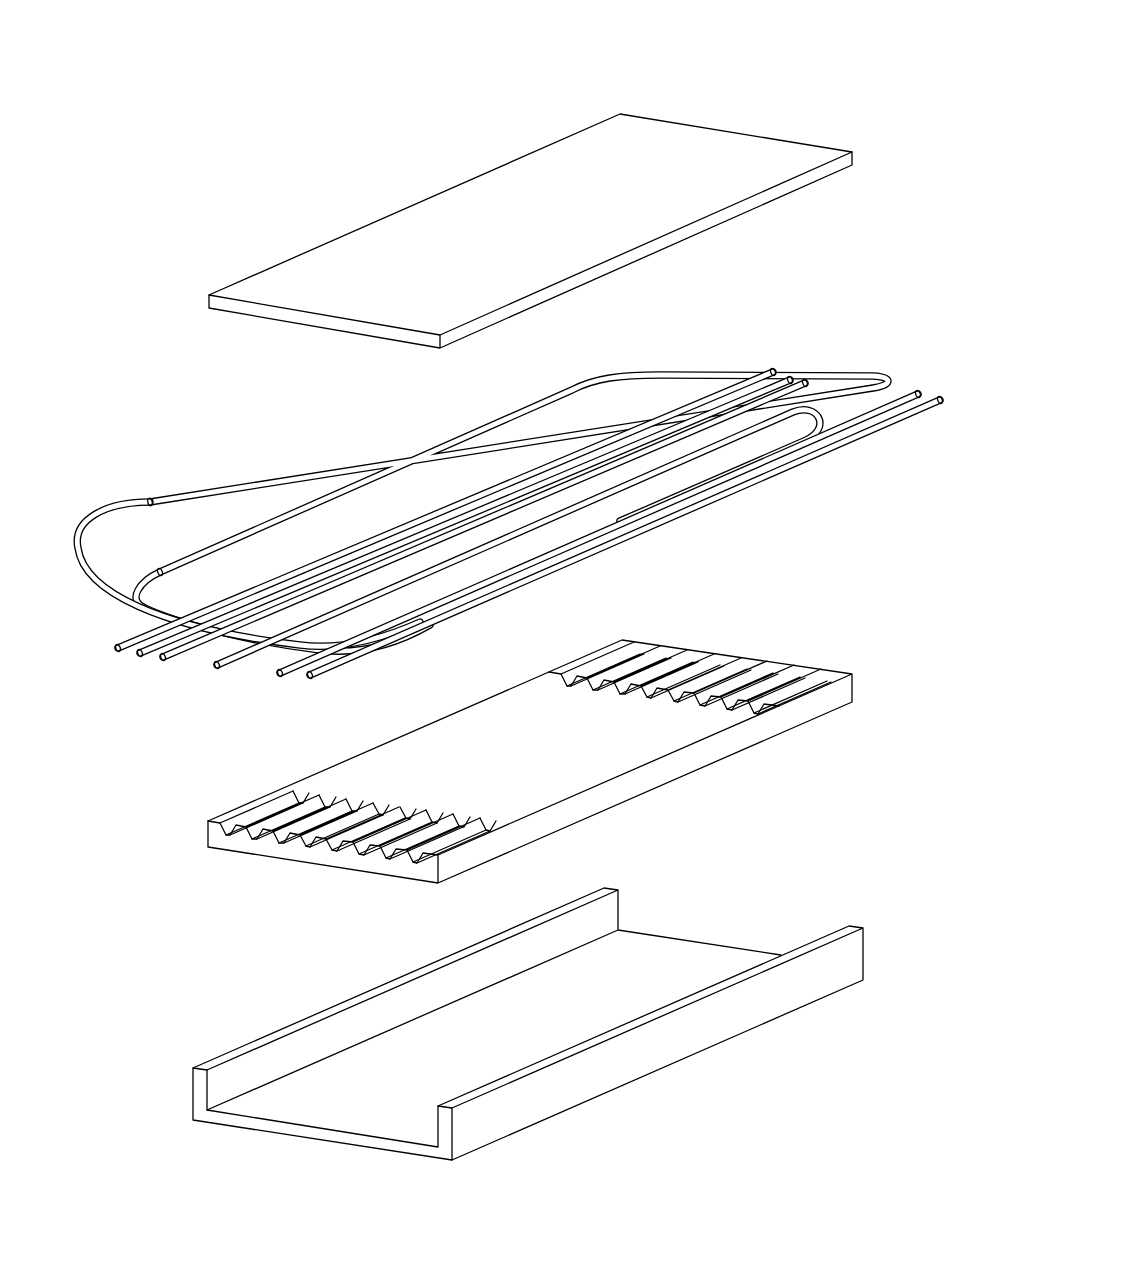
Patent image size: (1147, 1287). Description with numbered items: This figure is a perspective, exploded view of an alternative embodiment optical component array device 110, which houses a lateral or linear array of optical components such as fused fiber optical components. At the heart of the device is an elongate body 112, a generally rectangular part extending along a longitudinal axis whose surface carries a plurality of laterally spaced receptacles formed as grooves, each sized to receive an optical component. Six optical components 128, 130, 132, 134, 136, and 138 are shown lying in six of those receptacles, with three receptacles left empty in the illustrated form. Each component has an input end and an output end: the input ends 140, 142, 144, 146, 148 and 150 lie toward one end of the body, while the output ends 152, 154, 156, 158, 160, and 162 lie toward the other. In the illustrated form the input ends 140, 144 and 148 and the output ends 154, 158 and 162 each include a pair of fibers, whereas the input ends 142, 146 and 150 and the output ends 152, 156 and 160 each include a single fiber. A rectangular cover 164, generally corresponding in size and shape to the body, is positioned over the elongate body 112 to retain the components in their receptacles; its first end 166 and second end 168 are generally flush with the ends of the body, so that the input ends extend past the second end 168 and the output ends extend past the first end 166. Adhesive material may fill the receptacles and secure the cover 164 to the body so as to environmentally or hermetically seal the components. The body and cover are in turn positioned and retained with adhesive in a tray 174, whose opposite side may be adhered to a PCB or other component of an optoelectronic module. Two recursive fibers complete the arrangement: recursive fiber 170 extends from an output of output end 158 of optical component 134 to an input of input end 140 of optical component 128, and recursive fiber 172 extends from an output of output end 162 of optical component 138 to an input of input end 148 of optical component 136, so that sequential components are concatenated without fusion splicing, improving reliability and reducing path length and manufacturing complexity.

The optical component array device 110 is at (920, 42).
The elongate body 112 is at (742, 635).
The optical component 128 is at (640, 403).
The optical component 130 is at (347, 560).
The optical component 132 is at (660, 452).
The optical component 134 is at (710, 455).
The optical component 136 is at (753, 472).
The optical component 138 is at (457, 618).
The input end 140 is at (770, 372).
The input end 142 is at (780, 388).
The input end 144 is at (803, 380).
The input end 146 is at (857, 380).
The input end 148 is at (925, 395).
The input end 150 is at (943, 404).
The output end 152 is at (118, 648).
The output end 154 is at (140, 653).
The output end 156 is at (163, 657).
The output end 158 is at (217, 665).
The output end 160 is at (280, 673).
The output end 162 is at (310, 675).
The cover 164 is at (248, 258).
The first end of cover 166 is at (248, 308).
The second end of cover 168 is at (743, 133).
The recursive fiber 170 is at (248, 482).
The recursive fiber 172 is at (537, 393).
The tray 174 is at (743, 884).